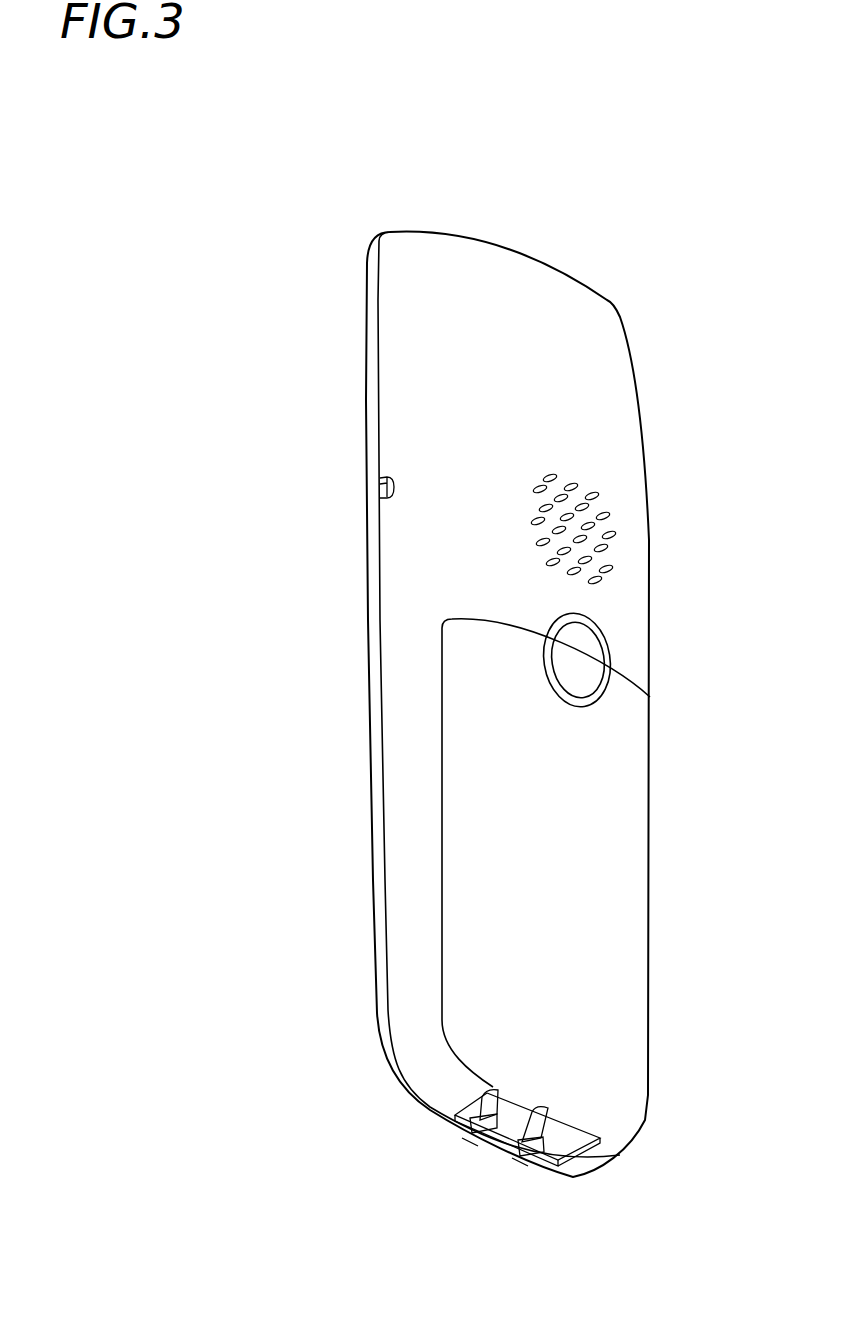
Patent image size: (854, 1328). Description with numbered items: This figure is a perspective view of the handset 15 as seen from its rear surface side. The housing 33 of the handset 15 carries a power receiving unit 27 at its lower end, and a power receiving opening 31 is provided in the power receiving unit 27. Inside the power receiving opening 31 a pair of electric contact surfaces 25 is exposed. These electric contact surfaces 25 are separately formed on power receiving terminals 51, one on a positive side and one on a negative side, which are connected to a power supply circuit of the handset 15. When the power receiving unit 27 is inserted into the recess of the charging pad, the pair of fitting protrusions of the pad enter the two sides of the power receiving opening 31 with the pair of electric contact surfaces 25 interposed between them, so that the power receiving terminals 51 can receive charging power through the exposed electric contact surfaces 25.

The handset 15 is at (285, 258).
The electric contact surfaces 25 is at (493, 1087).
The power receiving unit 27 is at (417, 1072).
The power receiving opening 31 is at (573, 1140).
The housing 33 is at (407, 400).
The power receiving terminals 51 is at (520, 1162).